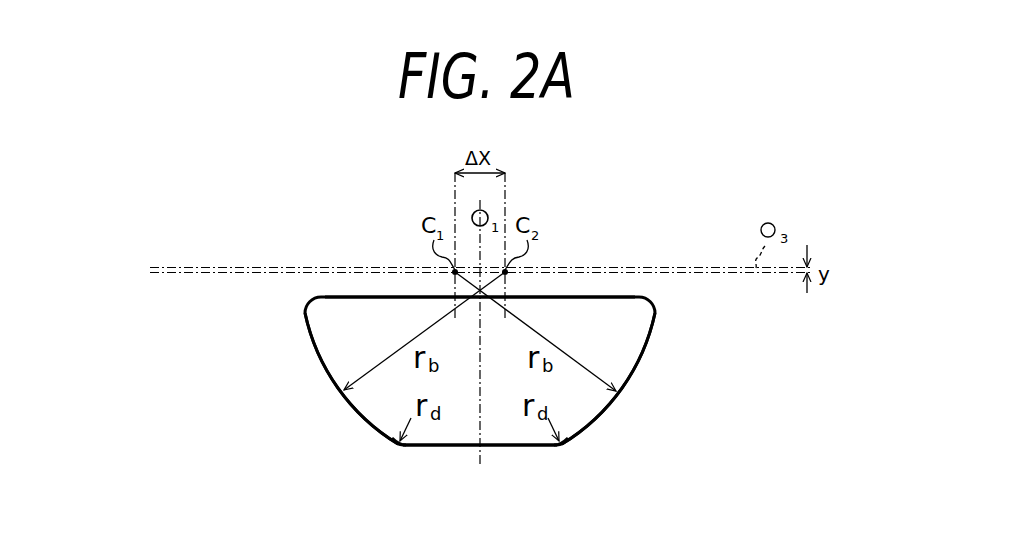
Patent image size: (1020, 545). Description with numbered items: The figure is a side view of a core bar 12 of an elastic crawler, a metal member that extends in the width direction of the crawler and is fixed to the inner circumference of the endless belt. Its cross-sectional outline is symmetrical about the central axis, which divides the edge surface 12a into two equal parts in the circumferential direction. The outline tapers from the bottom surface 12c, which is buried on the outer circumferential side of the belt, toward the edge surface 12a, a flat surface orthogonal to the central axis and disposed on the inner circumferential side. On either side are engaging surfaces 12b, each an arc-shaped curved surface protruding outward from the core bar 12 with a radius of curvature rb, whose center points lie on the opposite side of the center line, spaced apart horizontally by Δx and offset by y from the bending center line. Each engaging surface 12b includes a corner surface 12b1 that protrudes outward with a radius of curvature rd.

The core bar 12 is at (268, 322).
The edge surface 12a is at (462, 447).
The engaging surfaces 12b is at (323, 368).
The corner surface 12b1 is at (562, 447).
The bottom surface 12c is at (375, 296).